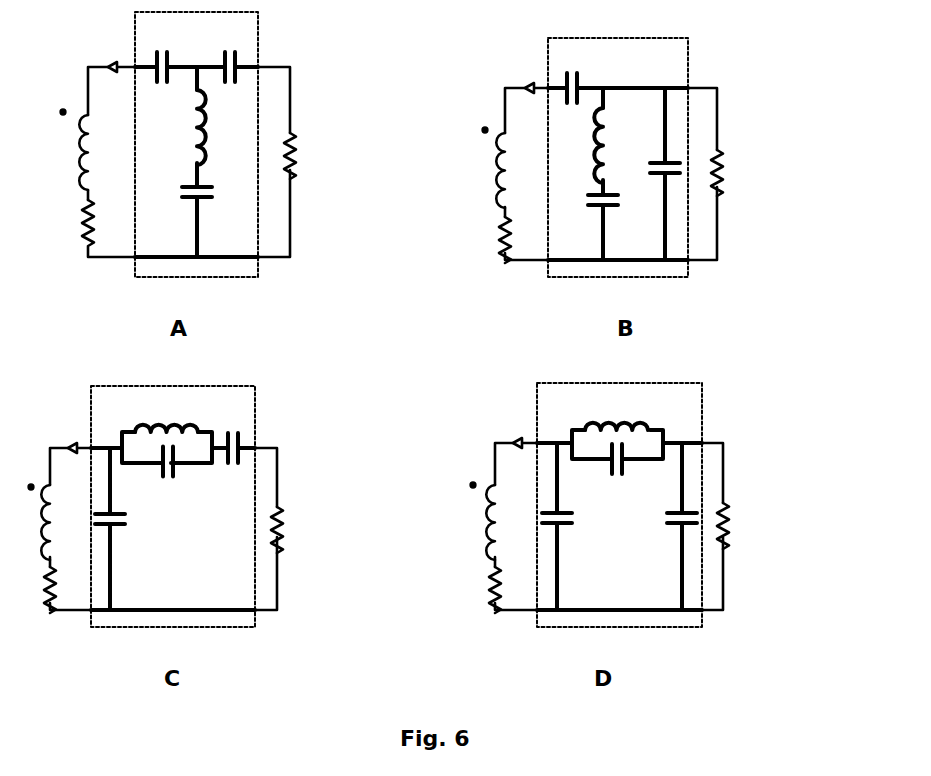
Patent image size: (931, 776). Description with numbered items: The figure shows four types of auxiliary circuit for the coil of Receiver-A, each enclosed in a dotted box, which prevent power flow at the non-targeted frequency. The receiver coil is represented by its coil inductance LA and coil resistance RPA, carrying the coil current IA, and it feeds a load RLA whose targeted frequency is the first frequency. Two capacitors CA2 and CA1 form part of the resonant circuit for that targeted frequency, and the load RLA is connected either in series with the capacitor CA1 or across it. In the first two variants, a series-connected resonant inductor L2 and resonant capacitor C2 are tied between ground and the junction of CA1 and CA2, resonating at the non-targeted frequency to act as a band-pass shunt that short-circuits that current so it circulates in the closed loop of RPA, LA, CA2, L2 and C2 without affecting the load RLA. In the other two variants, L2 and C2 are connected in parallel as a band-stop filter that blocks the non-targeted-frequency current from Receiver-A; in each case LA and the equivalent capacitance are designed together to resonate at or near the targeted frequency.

In FIG. 6A, the coil current IA is at (108, 49).
In FIG. 6B, the coil current IA is at (524, 72).
In FIG. 6C, the coil current IA is at (68, 433).
In FIG. 6D, the coil current IA is at (514, 429).
In FIG. 6A, the coil inductance LA is at (64, 152).
In FIG. 6B, the coil inductance LA is at (483, 170).
In FIG. 6C, the coil inductance LA is at (30, 522).
In FIG. 6D, the coil inductance LA is at (473, 522).
In FIG. 6A, the coil resistance RPA is at (66, 223).
In FIG. 6B, the coil resistance RPA is at (485, 240).
In FIG. 6C, the coil resistance RPA is at (32, 590).
In FIG. 6D, the coil resistance RPA is at (477, 590).
In FIG. 6A, the load RLA is at (310, 156).
In FIG. 6B, the load RLA is at (732, 173).
In FIG. 6C, the load RLA is at (292, 530).
In FIG. 6D, the load RLA is at (740, 526).
In FIG. 6A, the capacitor CA2 is at (166, 52).
In FIG. 6B, the capacitor CA2 is at (571, 75).
In FIG. 6C, the capacitor CA2 is at (126, 523).
In FIG. 6D, the capacitor CA2 is at (573, 521).
In FIG. 6A, the capacitor CA1 is at (228, 52).
In FIG. 6B, the capacitor CA1 is at (646, 164).
In FIG. 6C, the capacitor CA1 is at (234, 434).
In FIG. 6D, the capacitor CA1 is at (664, 521).
In FIG. 6A, the resonant inductor L2 is at (178, 127).
In FIG. 6B, the resonant inductor L2 is at (581, 145).
In FIG. 6C, the resonant inductor L2 is at (166, 411).
In FIG. 6D, the resonant inductor L2 is at (616, 408).
In FIG. 6A, the resonant capacitor C2 is at (181, 192).
In FIG. 6B, the resonant capacitor C2 is at (589, 203).
In FIG. 6C, the resonant capacitor C2 is at (173, 477).
In FIG. 6D, the resonant capacitor C2 is at (623, 474).